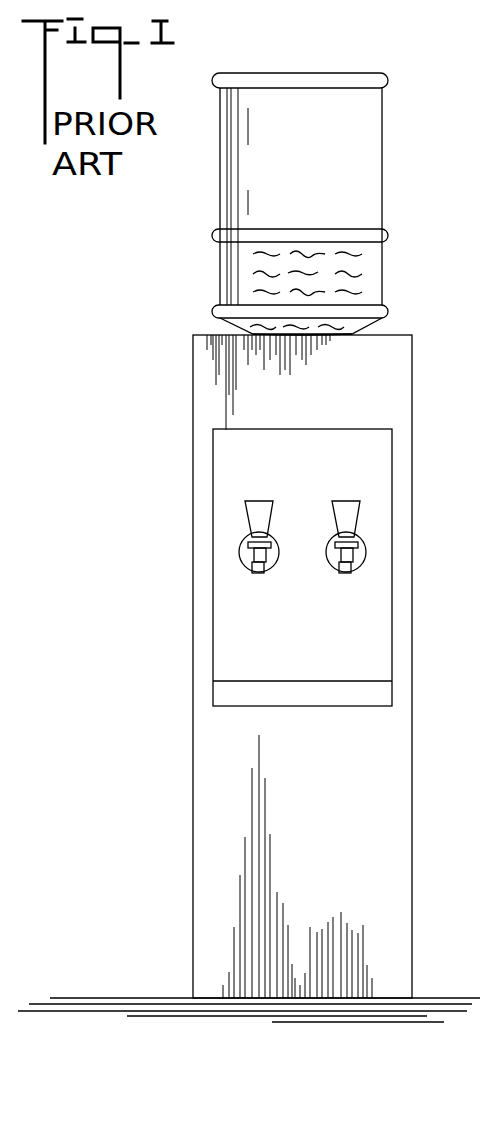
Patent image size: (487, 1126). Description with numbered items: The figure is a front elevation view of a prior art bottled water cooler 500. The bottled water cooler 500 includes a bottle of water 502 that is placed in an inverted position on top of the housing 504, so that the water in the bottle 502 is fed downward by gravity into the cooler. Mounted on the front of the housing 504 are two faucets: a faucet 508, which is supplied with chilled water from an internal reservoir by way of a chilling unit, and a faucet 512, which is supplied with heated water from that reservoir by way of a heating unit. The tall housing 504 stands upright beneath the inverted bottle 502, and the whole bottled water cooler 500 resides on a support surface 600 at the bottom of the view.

The prior art bottled water cooler 500 is at (113, 300).
The bottle of water 502 is at (382, 212).
The housing 504 is at (193, 637).
The faucet 508 is at (253, 557).
The faucet 512 is at (347, 557).
The support surface 600 is at (322, 1020).